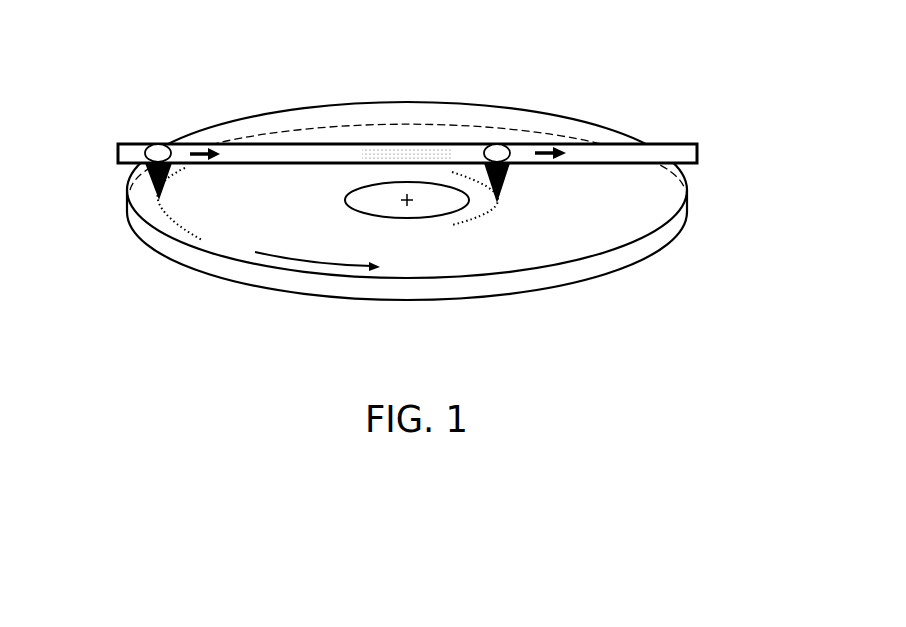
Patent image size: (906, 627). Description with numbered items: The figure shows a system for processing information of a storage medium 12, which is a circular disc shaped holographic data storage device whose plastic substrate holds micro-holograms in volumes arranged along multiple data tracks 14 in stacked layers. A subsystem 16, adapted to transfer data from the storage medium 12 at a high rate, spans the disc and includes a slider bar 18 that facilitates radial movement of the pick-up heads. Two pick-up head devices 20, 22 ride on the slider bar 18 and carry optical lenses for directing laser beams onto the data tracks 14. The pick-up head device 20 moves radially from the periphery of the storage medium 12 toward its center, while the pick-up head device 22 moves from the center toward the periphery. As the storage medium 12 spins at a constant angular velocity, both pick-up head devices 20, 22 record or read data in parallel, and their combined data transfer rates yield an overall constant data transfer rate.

The storage medium 12 is at (128, 218).
The data tracks 14 is at (180, 228).
The subsystem 16 is at (118, 155).
The slider bar 18 is at (218, 143).
The pick-up head device 20 is at (158, 144).
The pick-up head device 22 is at (497, 144).